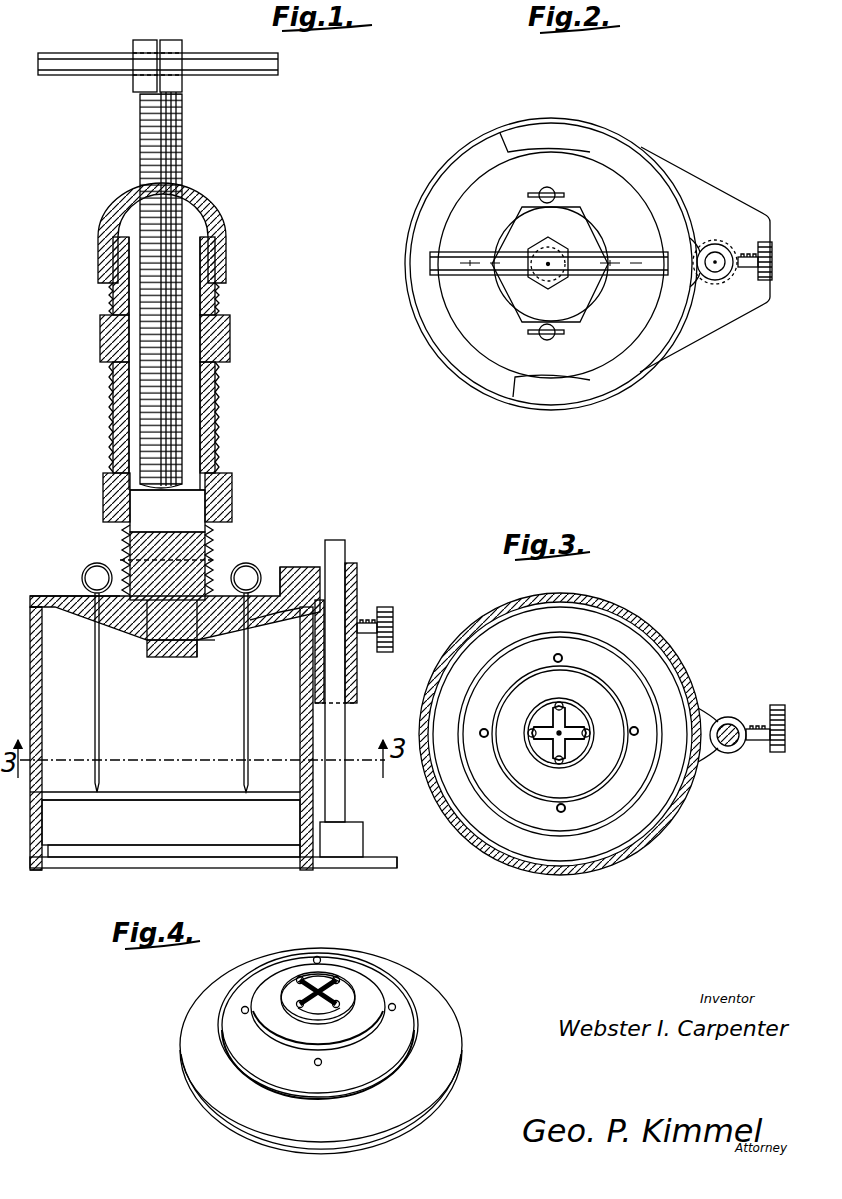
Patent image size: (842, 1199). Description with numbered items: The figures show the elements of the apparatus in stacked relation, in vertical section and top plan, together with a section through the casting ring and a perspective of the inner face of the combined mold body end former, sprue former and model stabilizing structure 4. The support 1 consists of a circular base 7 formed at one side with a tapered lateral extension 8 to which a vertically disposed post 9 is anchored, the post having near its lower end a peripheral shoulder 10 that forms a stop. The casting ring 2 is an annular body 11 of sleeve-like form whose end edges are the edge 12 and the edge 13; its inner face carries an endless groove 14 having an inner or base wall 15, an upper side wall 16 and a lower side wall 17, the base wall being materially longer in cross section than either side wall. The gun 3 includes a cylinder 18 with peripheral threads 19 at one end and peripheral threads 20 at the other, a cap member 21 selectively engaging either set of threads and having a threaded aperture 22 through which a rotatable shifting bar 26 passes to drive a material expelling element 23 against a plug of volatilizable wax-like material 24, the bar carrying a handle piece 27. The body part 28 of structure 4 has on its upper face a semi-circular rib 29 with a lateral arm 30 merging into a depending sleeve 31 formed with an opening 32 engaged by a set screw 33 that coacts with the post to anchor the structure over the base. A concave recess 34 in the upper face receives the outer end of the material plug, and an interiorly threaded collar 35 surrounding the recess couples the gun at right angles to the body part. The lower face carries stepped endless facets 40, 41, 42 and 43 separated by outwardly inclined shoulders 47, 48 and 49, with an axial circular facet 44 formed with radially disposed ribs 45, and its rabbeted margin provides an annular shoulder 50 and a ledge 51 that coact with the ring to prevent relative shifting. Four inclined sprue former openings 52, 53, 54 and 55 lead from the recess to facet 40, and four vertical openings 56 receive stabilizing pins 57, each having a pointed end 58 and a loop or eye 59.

In FIG. 1, the support 1 is at (357, 793).
In FIG. 1, the casting ring 2 is at (318, 730).
In FIG. 3, the casting ring 2 is at (675, 646).
In FIG. 1, the gun 3 is at (222, 388).
In FIG. 1, the combined mold body end former, sprue former and model stabilizing structure 4 is at (271, 590).
In FIG. 2, the combined mold body end former, sprue former and model stabilizing structure 4 is at (490, 353).
In FIG. 3, the combined mold body end former, sprue former and model stabilizing structure 4 is at (603, 630).
In FIG. 4, the combined mold body end former, sprue former and model stabilizing structure 4 is at (432, 1017).
In FIG. 1, the circular base 7 is at (248, 868).
In FIG. 1, the tapered lateral extension 8 is at (373, 868).
In FIG. 2, the tapered lateral extension 8 is at (738, 300).
In FIG. 1, the post 9 is at (342, 736).
In FIG. 2, the post 9 is at (718, 257).
In FIG. 3, the post 9 is at (735, 725).
In FIG. 1, the peripheral shoulder 10 is at (345, 824).
In FIG. 1, the annular body 11 is at (32, 677).
In FIG. 3, the annular body 11 is at (590, 870).
In FIG. 1, the end edge 12 is at (38, 610).
In FIG. 1, the end edge 13 is at (32, 858).
In FIG. 1, the endless groove 14 is at (60, 824).
In FIG. 1, the inner or base wall 15 is at (45, 806).
In FIG. 1, the upper side wall 16 is at (33, 796).
In FIG. 1, the lower side wall 17 is at (60, 850).
In FIG. 1, the cylinder 18 is at (216, 425).
In FIG. 1, the peripheral threads 19 is at (216, 300).
In FIG. 1, the peripheral threads 20 is at (216, 548).
In FIG. 1, the cap member 21 is at (222, 203).
In FIG. 1, the aperture 22 is at (183, 225).
In FIG. 2, the aperture 22 is at (510, 292).
In FIG. 1, the material expelling element 23 is at (205, 500).
In FIG. 1, the volatilizable wax-like material 24 is at (165, 548).
In FIG. 1, the shifting bar 26 is at (183, 225).
In FIG. 2, the shifting bar 26 is at (545, 263).
In FIG. 1, the handle piece 27 is at (227, 58).
In FIG. 2, the handle piece 27 is at (445, 253).
In FIG. 1, the body part 28 is at (56, 597).
In FIG. 2, the body part 28 is at (545, 265).
In FIG. 2, the semi-circular rib 29 is at (643, 175).
In FIG. 2, the lateral arm 30 is at (700, 244).
In FIG. 1, the sleeve 31 is at (358, 578).
In FIG. 1, the opening 32 is at (360, 620).
In FIG. 2, the opening 32 is at (748, 260).
In FIG. 3, the opening 32 is at (762, 742).
In FIG. 1, the set screw 33 is at (393, 626).
In FIG. 2, the set screw 33 is at (748, 255).
In FIG. 3, the set screw 33 is at (778, 705).
In FIG. 1, the concave recess 34 is at (170, 659).
In FIG. 1, the collar 35 is at (228, 578).
In FIG. 1, the facet 40 is at (215, 615).
In FIG. 4, the facet 40 is at (352, 987).
In FIG. 1, the facet 41 is at (230, 625).
In FIG. 3, the facet 41 is at (520, 770).
In FIG. 4, the facet 41 is at (370, 996).
In FIG. 1, the facet 42 is at (282, 612).
In FIG. 3, the facet 42 is at (545, 650).
In FIG. 4, the facet 42 is at (402, 996).
In FIG. 1, the facet 43 is at (298, 610).
In FIG. 3, the facet 43 is at (512, 632).
In FIG. 4, the facet 43 is at (428, 994).
In FIG. 3, the circular facet 44 is at (570, 752).
In FIG. 4, the circular facet 44 is at (325, 984).
In FIG. 3, the radially disposed ribs 45 is at (573, 746).
In FIG. 4, the radially disposed ribs 45 is at (310, 986).
In FIG. 4, the shoulder 47 is at (285, 1014).
In FIG. 4, the shoulder 48 is at (270, 1047).
In FIG. 4, the shoulder 49 is at (255, 1084).
In FIG. 4, the annular shoulder 50 is at (455, 1060).
In FIG. 3, the ledge 51 is at (630, 702).
In FIG. 4, the ledge 51 is at (460, 1020).
In FIG. 3, the sprue former opening 52 is at (562, 706).
In FIG. 3, the sprue former opening 53 is at (532, 733).
In FIG. 3, the sprue former opening 54 is at (586, 733).
In FIG. 3, the sprue former opening 55 is at (558, 761).
In FIG. 1, the vertical openings 56 is at (90, 604).
In FIG. 3, the vertical openings 56 is at (668, 802).
In FIG. 1, the stabilizing pin 57 is at (99, 705).
In FIG. 1, the flat pointed or drill pointed end 58 is at (99, 787).
In FIG. 1, the loop or eye 59 is at (91, 565).
In FIG. 2, the loop or eye 59 is at (557, 192).